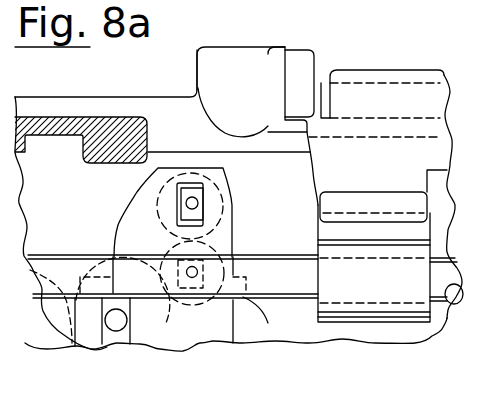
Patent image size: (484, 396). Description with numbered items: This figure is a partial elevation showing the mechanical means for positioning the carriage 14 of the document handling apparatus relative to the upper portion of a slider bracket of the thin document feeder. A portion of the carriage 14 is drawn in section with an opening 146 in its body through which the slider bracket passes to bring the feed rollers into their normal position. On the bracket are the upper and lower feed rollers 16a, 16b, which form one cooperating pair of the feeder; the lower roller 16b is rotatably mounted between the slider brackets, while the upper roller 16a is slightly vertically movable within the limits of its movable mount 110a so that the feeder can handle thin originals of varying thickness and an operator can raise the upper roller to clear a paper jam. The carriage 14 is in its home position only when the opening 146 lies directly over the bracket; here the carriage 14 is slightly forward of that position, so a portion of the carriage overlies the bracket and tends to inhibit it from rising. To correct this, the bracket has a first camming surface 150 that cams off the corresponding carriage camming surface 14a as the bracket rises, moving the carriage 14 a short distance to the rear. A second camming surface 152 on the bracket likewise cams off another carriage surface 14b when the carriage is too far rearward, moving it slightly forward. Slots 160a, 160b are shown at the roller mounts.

The carriage 14 is at (321, 83).
The carriage camming surface 14a is at (151, 160).
The carriage surface 14b is at (200, 100).
The opening 146 is at (225, 89).
The first camming surface 150 is at (125, 210).
The movable mount 110a is at (129, 237).
The upper feed roller 16a is at (231, 190).
The lower feed roller 16b is at (215, 290).
The second camming surface 152 is at (232, 192).
The upper slot 160a is at (197, 206).
The lower slot 160b is at (198, 276).